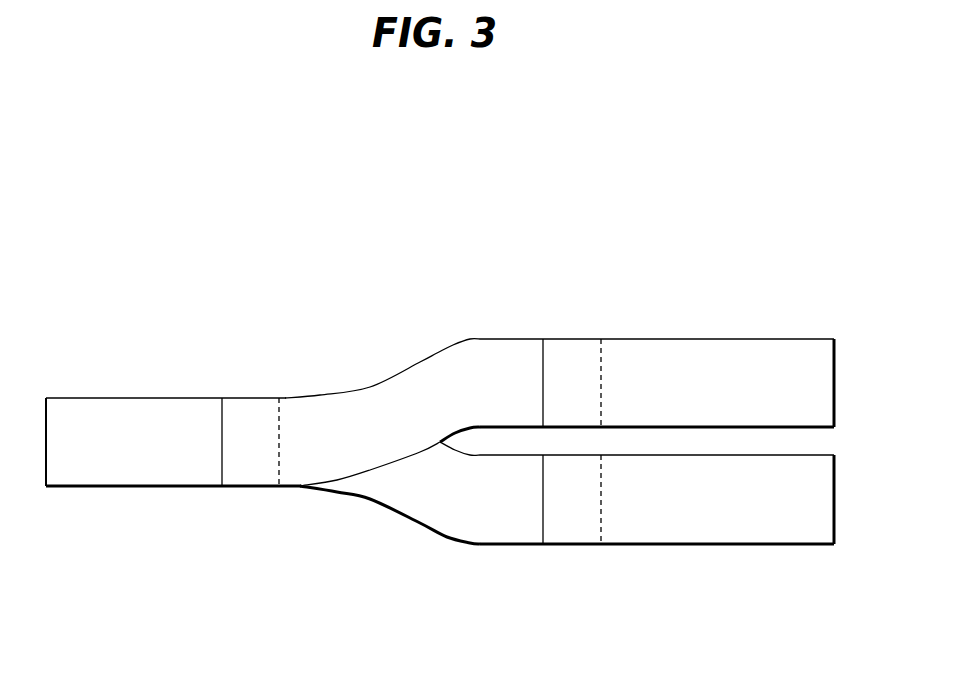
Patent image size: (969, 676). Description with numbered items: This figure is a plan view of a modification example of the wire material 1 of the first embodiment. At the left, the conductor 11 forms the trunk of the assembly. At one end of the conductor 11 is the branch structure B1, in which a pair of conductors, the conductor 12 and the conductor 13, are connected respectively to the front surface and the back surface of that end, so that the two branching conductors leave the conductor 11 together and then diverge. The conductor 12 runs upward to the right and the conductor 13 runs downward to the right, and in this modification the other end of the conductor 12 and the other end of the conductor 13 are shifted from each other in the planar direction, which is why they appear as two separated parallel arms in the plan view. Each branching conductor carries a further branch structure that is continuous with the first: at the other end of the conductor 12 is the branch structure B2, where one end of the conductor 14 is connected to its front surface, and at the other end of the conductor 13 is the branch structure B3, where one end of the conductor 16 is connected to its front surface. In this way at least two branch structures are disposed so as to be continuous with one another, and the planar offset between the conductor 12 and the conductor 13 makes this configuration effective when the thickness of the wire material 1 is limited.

The wire material 1 is at (455, 148).
The conductor 11 is at (134, 418).
The conductor 12 is at (405, 385).
The conductor 13 is at (448, 522).
The conductor 14 is at (737, 353).
The conductor 16 is at (745, 530).
The branch structure B1 is at (249, 500).
The branch structure B2 is at (580, 325).
The branch structure B3 is at (568, 557).